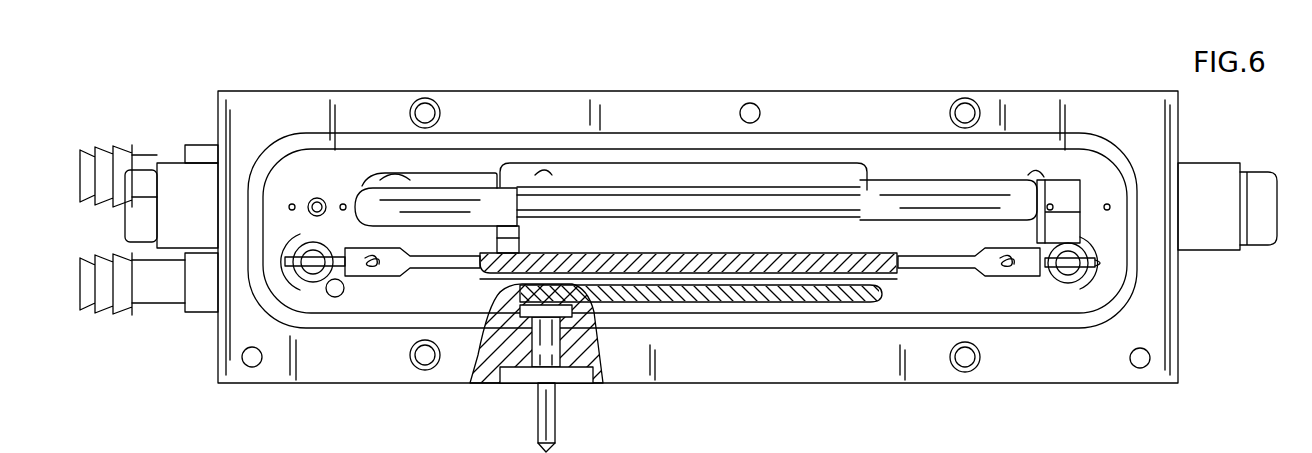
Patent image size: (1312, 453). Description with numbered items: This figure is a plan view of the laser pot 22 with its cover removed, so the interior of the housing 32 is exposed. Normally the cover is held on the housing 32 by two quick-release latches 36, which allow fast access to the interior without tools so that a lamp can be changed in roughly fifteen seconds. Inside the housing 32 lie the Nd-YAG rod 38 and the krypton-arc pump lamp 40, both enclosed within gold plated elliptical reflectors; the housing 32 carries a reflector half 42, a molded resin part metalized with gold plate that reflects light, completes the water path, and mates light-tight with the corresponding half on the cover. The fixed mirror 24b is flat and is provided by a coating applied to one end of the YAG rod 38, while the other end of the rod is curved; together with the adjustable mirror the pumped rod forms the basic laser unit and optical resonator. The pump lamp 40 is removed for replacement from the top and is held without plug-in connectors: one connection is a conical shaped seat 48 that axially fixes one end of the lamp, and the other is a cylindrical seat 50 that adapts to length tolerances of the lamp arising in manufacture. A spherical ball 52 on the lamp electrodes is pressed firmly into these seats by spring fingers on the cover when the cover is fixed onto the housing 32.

The laser pot 22 is at (975, 75).
The fixed mirror 24b is at (536, 190).
The housing 32 is at (855, 385).
The quick-release latches 36 is at (593, 368).
The Nd-YAG rod 38 is at (668, 205).
The krypton-arc pump lamp 40 is at (748, 263).
The reflector half 42 is at (767, 183).
The conical shaped seat 48 is at (1093, 277).
The cylindrical seat 50 is at (303, 268).
The spherical ball 52 is at (318, 266).